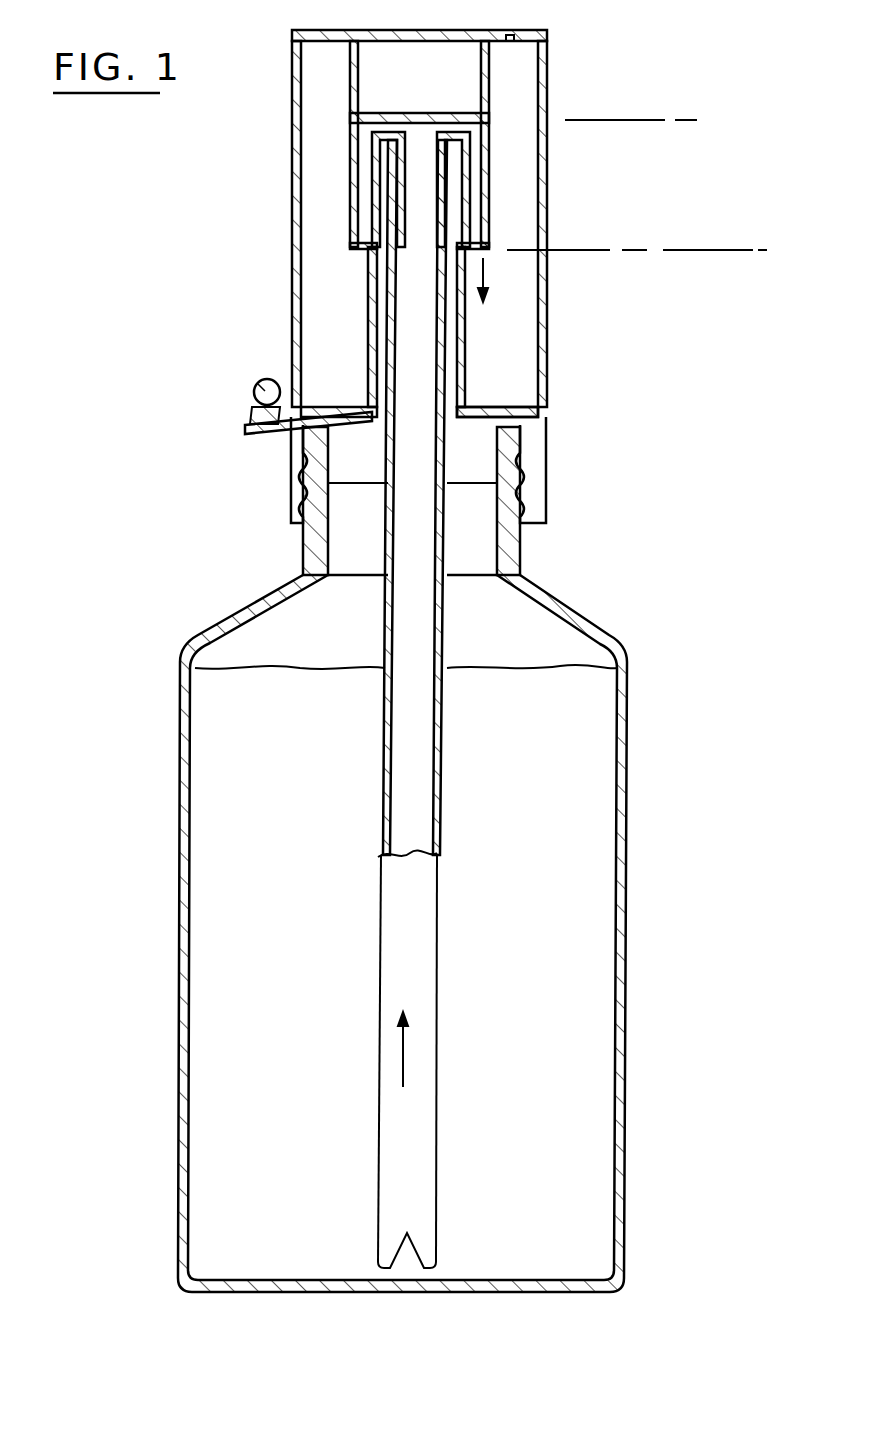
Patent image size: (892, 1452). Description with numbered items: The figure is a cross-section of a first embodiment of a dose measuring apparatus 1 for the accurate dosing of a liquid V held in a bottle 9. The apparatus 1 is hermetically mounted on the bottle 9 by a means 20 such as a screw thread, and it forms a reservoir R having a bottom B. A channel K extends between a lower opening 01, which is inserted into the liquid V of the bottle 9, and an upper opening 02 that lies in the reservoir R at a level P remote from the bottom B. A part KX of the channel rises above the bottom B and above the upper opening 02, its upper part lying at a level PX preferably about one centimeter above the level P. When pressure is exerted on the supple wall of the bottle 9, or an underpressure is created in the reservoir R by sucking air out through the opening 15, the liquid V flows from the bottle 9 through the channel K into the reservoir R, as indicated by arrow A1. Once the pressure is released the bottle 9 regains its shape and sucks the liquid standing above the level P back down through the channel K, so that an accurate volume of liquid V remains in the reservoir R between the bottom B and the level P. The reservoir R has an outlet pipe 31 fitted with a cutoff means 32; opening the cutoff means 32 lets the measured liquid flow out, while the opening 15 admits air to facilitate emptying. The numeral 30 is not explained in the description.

The dose measuring apparatus 1 is at (545, 352).
The opening 15 is at (512, 30).
The bottom B is at (487, 408).
The reservoir R is at (492, 342).
The part of the channel Kx is at (419, 222).
The upper opening 02 is at (360, 250).
The second valve sleeve 30 is at (447, 208).
The channel K is at (473, 187).
The lower opening 01 is at (417, 1243).
The arrow A1 is at (457, 1083).
The level Px is at (642, 120).
The level P is at (723, 250).
The outlet pipe 31 is at (252, 433).
The cutoff means 32 is at (258, 385).
The means for hermetically mounting 20 is at (532, 485).
The bottle 9 is at (625, 867).
The liquid V is at (521, 938).